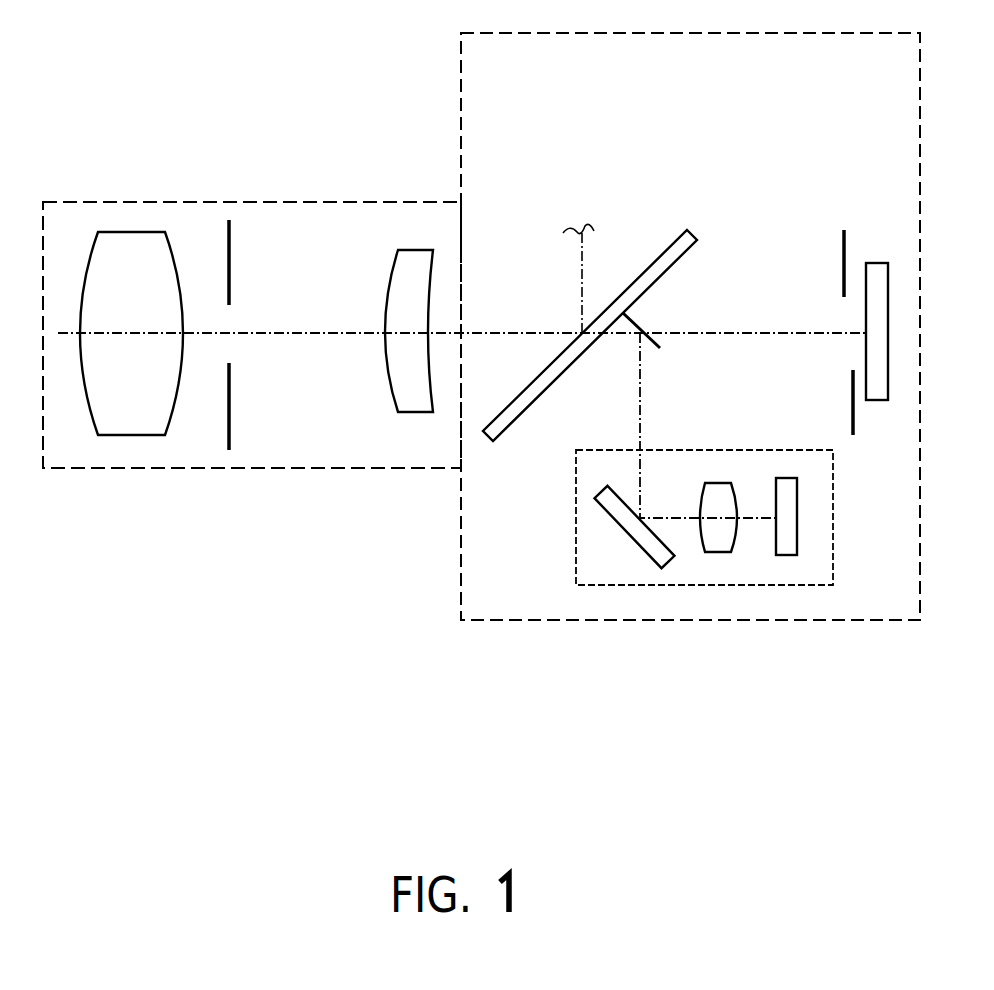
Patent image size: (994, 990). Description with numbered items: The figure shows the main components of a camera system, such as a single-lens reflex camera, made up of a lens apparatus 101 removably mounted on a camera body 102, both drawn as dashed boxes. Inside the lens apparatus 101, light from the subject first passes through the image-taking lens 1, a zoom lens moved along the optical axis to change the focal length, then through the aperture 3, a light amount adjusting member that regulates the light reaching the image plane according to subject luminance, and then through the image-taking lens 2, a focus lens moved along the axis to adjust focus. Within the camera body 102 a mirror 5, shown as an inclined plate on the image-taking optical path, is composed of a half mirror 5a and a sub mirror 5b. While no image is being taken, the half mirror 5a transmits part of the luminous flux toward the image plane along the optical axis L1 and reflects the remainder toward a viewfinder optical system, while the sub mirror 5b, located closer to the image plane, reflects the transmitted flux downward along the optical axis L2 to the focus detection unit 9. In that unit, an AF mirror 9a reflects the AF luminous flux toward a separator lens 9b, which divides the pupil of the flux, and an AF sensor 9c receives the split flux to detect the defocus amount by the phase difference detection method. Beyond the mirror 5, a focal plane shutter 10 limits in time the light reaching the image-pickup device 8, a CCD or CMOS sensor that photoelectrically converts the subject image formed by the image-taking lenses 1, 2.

The image-taking lens 1 is at (132, 232).
The image-taking lens 2 is at (408, 250).
The aperture 3 is at (230, 219).
The mirror 5 is at (489, 448).
The half mirror 5a is at (642, 273).
The sub mirror 5b is at (640, 325).
The image-pickup device 8 is at (877, 263).
The focus detection unit 9 is at (576, 512).
The AF mirror 9a is at (638, 550).
The separator lens 9b is at (722, 552).
The AF sensor 9c is at (785, 555).
The shutter 10 is at (844, 245).
The lens apparatus 101 is at (318, 200).
The camera body 102 is at (461, 70).
The optical axis L1 is at (310, 336).
The optical axis L2 is at (644, 400).